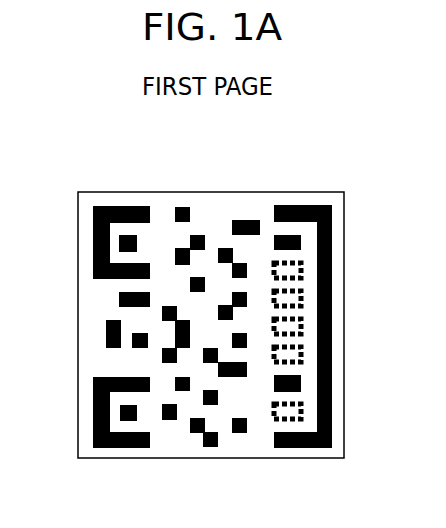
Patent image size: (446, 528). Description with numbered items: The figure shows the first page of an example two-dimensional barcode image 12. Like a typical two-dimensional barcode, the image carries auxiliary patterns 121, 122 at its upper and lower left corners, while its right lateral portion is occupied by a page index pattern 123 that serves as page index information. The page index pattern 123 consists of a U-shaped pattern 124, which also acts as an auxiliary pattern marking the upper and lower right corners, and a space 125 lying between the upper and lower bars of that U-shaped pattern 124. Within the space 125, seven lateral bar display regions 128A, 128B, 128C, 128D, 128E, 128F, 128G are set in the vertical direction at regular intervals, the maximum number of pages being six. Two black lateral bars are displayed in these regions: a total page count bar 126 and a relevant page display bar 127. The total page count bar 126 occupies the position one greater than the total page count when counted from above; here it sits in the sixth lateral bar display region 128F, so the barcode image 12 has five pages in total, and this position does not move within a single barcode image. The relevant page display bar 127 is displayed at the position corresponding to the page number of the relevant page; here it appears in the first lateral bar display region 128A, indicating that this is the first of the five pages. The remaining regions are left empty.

The two-dimensional barcode image 12 is at (78, 346).
The auxiliary pattern 121 is at (93, 254).
The auxiliary pattern 122 is at (93, 416).
The page index pattern 123 is at (344, 460).
The U-shaped pattern 124 is at (315, 205).
The space 125 is at (281, 286).
The total page count bar 126 is at (303, 383).
The relevant page display bar 127 is at (303, 237).
The lateral bar display region 128A is at (303, 245).
The lateral bar display region 128B is at (303, 273).
The lateral bar display region 128C is at (303, 302).
The lateral bar display region 128D is at (303, 331).
The lateral bar display region 128E is at (303, 358).
The lateral bar display region 128F is at (303, 413).
The lateral bar display region 128G is at (303, 386).